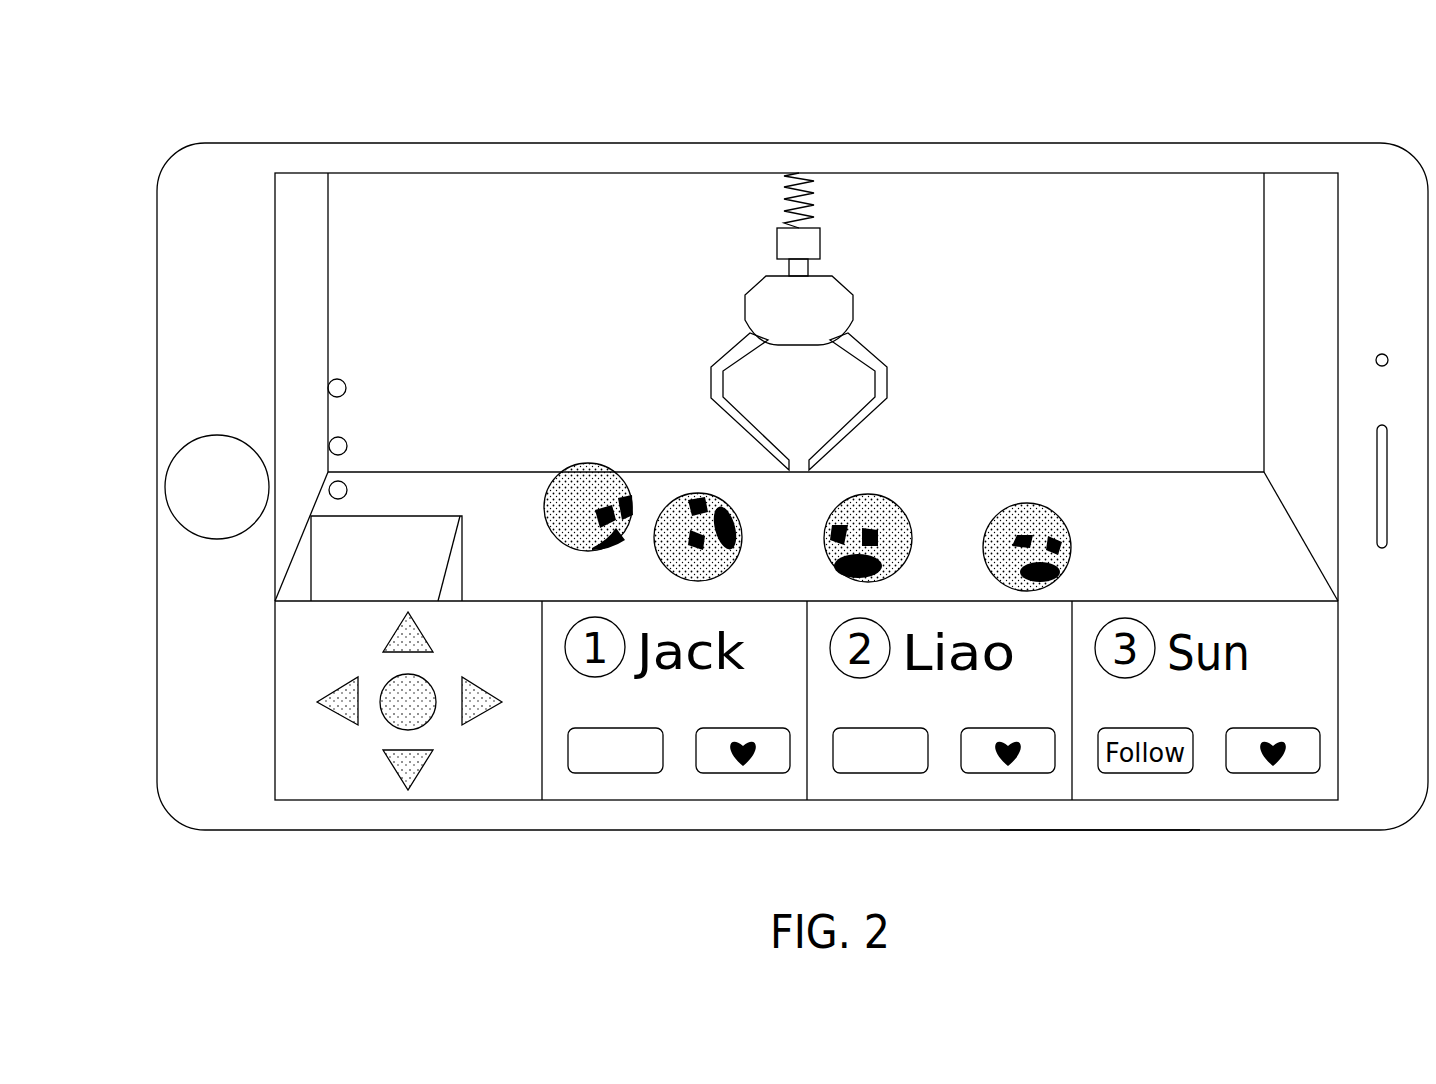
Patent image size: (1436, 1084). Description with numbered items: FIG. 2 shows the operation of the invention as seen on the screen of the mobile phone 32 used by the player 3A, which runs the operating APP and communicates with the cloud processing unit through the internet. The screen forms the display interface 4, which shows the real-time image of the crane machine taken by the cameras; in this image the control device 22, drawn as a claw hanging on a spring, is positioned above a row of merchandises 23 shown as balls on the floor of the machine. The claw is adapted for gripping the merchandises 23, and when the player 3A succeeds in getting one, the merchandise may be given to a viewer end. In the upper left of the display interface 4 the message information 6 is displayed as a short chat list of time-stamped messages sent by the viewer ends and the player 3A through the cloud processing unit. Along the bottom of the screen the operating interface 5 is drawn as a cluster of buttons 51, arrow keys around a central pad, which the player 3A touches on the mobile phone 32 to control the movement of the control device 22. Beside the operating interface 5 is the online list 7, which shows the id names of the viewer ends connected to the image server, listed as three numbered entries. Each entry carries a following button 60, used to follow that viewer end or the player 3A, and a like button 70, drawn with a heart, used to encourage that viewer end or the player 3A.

The player 3A is at (198, 138).
The display interface 4 is at (1112, 190).
The control device 22 is at (778, 327).
The message information 6 is at (360, 382).
The operating interface 5 is at (342, 776).
The buttons 51 is at (420, 768).
The following button 60 is at (615, 773).
The like button 70 is at (703, 773).
The online list 7 is at (962, 790).
The mobile phone 32 is at (1083, 830).
The merchandises 23 is at (1023, 545).